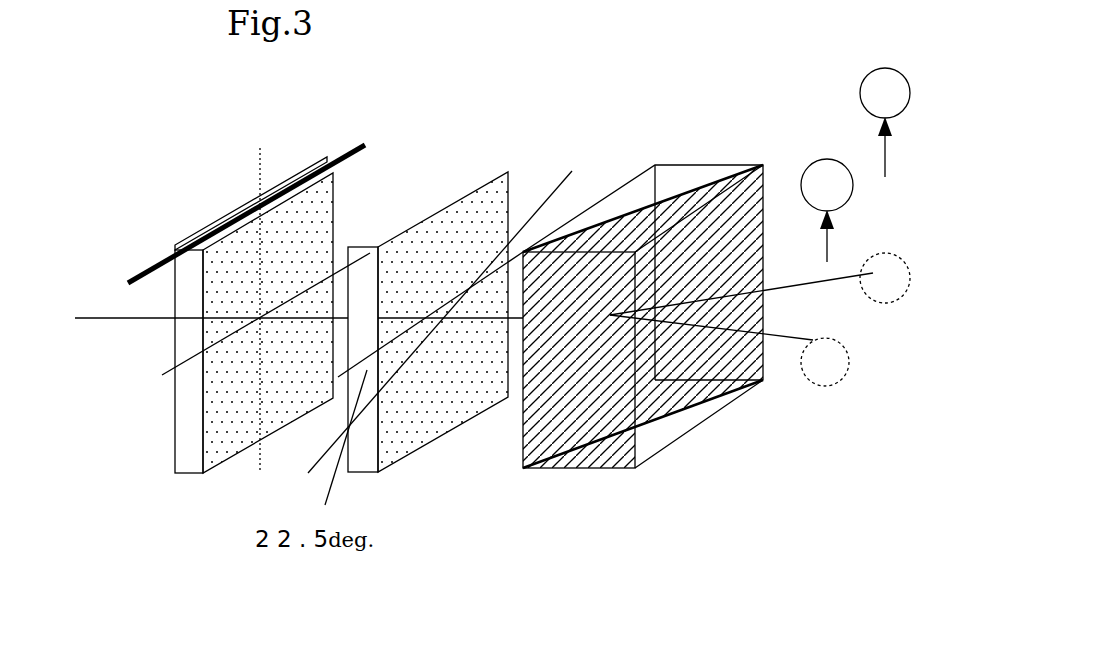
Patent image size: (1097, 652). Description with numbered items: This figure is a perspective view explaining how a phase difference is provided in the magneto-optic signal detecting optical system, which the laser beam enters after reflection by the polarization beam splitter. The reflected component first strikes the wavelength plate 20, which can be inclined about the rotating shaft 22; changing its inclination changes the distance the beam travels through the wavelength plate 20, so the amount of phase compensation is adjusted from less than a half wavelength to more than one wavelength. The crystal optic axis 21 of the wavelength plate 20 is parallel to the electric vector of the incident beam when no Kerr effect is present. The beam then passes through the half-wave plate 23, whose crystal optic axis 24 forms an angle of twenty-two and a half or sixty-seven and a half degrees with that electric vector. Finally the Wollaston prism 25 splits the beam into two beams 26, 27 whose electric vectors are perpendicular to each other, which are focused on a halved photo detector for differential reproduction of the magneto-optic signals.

The wavelength plate 20 is at (230, 263).
The crystal optic axis 21 is at (227, 340).
The rotating shaft 22 is at (141, 279).
The λ/2 plate 23 is at (475, 207).
The crystal optic axis 24 is at (425, 340).
The Wollaston prism 25 is at (597, 367).
The beam 26 is at (860, 82).
The beam 27 is at (883, 302).